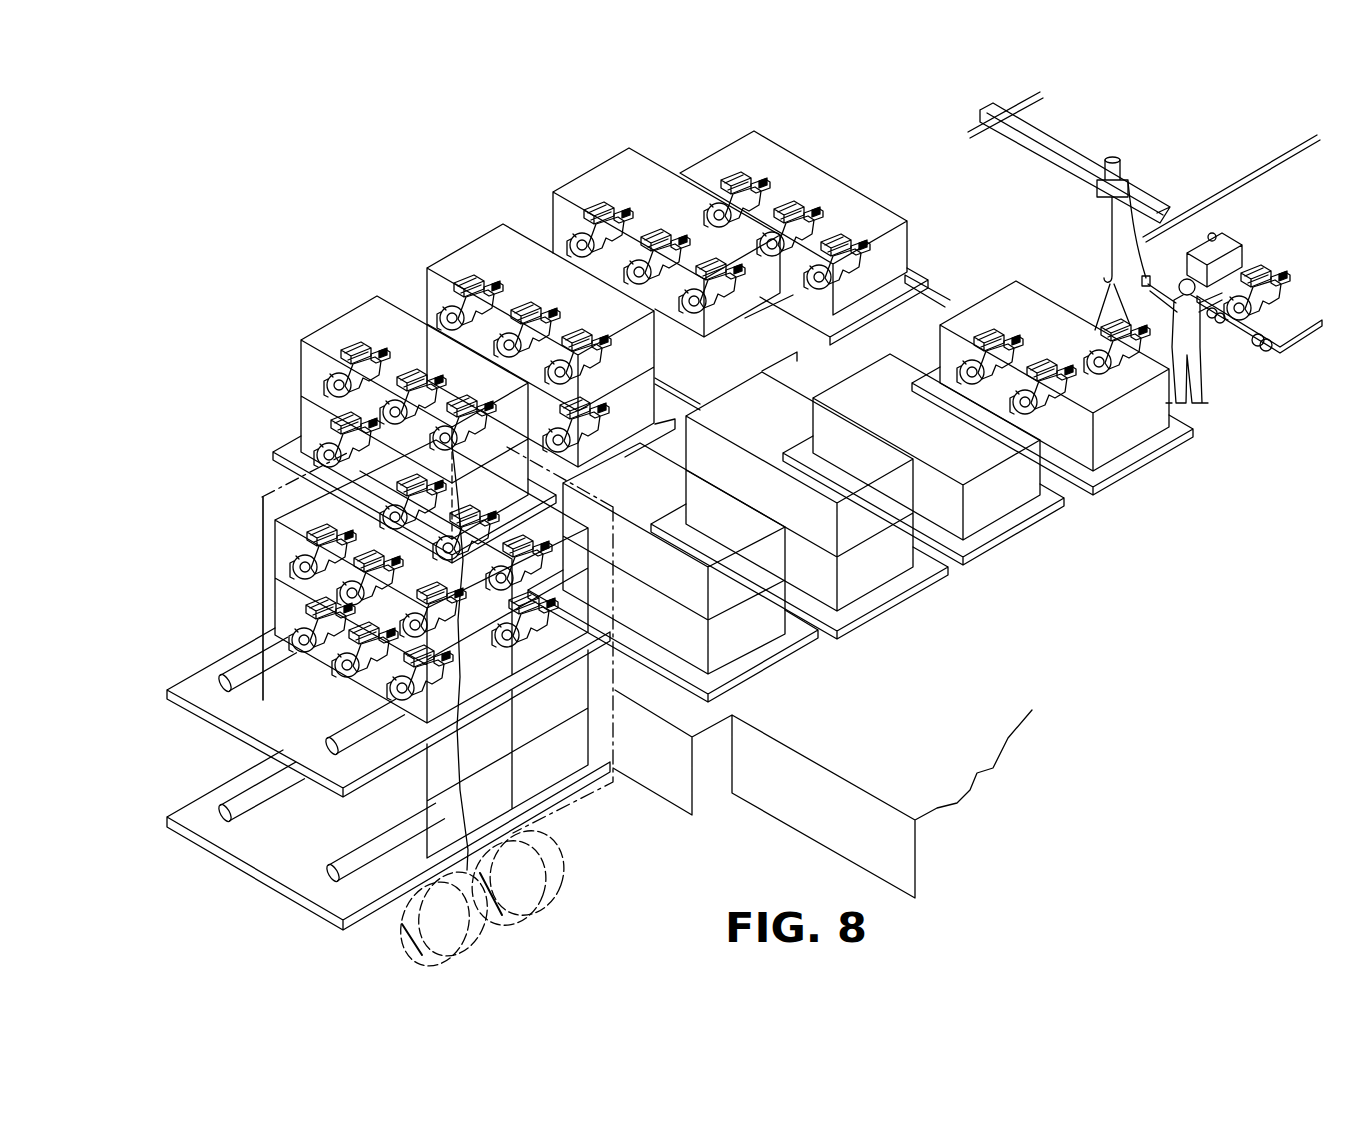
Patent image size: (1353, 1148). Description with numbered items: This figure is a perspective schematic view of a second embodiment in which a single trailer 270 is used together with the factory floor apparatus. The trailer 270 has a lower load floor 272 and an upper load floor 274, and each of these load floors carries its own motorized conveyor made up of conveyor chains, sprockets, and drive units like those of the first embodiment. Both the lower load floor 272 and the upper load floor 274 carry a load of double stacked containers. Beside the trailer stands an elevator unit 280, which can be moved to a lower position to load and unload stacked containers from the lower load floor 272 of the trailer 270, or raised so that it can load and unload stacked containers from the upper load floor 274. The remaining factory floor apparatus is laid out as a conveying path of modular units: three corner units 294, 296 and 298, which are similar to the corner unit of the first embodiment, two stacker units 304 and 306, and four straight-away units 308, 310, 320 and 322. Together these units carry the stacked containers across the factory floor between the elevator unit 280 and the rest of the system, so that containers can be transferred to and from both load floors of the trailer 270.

The trailer 270 is at (285, 488).
The lower load floor 272 is at (178, 815).
The upper load floor 274 is at (188, 683).
The elevator unit 280 is at (781, 674).
The corner unit 294 is at (288, 448).
The corner unit 296 is at (921, 270).
The corner unit 298 is at (1152, 452).
The stacker unit 304 is at (784, 352).
The stacker unit 306 is at (1020, 535).
The straight-away unit 308 is at (585, 487).
The straight-away unit 310 is at (662, 427).
The straight-away unit 320 is at (944, 299).
The straight-away unit 322 is at (906, 594).